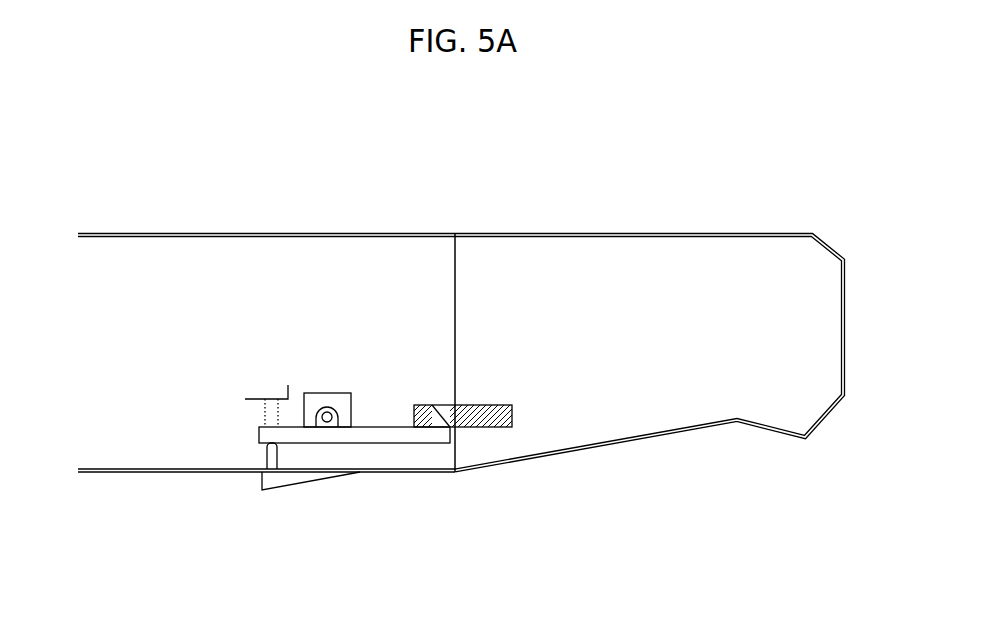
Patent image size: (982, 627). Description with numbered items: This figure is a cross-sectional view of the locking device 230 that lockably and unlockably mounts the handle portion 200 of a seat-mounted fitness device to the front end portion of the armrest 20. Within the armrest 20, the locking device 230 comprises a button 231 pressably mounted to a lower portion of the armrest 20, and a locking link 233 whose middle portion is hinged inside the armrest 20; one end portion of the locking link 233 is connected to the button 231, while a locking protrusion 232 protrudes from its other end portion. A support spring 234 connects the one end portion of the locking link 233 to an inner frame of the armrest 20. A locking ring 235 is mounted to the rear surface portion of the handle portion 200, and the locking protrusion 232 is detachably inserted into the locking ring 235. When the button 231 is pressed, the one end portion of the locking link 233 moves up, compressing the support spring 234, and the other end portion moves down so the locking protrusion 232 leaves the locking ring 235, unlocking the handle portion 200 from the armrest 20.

The armrest 20 is at (219, 208).
The handle portion 200 is at (516, 233).
The locking device 230 is at (349, 372).
The button 231 is at (283, 480).
The locking protrusion 232 is at (437, 412).
The locking link 233 is at (373, 433).
The support spring 234 is at (265, 417).
The locking ring 235 is at (485, 427).